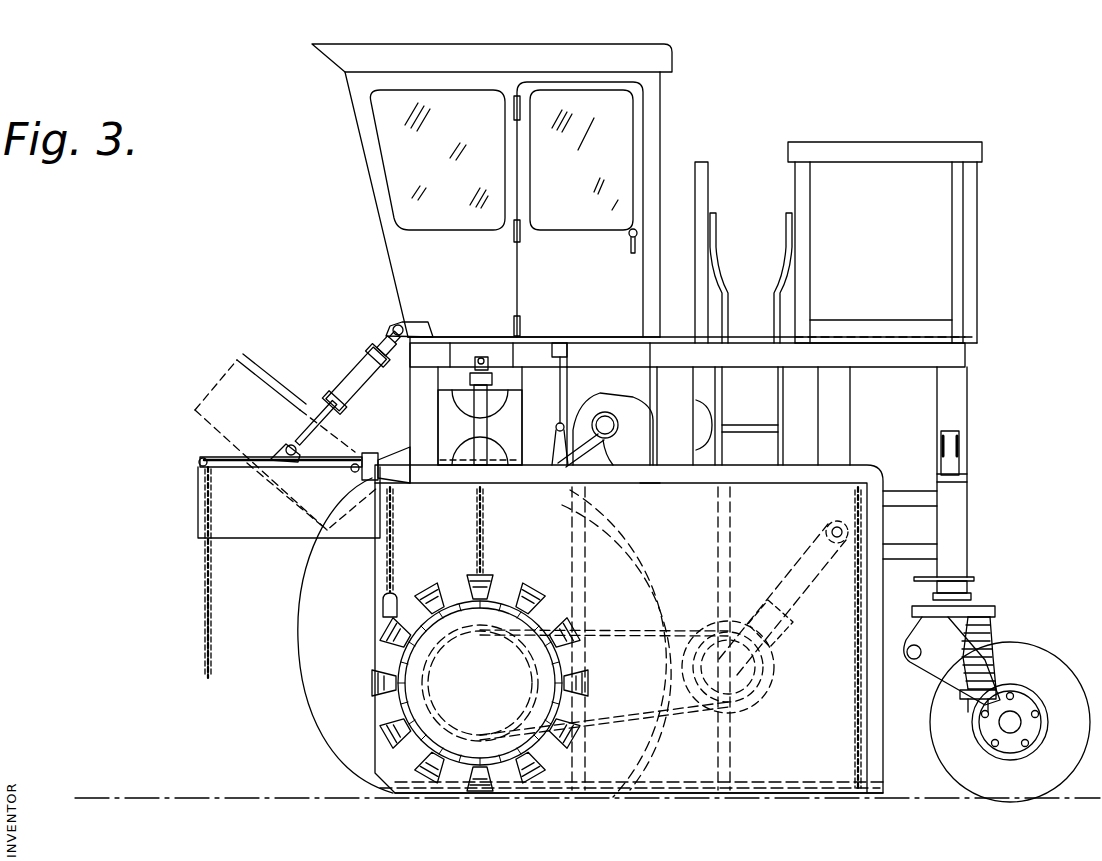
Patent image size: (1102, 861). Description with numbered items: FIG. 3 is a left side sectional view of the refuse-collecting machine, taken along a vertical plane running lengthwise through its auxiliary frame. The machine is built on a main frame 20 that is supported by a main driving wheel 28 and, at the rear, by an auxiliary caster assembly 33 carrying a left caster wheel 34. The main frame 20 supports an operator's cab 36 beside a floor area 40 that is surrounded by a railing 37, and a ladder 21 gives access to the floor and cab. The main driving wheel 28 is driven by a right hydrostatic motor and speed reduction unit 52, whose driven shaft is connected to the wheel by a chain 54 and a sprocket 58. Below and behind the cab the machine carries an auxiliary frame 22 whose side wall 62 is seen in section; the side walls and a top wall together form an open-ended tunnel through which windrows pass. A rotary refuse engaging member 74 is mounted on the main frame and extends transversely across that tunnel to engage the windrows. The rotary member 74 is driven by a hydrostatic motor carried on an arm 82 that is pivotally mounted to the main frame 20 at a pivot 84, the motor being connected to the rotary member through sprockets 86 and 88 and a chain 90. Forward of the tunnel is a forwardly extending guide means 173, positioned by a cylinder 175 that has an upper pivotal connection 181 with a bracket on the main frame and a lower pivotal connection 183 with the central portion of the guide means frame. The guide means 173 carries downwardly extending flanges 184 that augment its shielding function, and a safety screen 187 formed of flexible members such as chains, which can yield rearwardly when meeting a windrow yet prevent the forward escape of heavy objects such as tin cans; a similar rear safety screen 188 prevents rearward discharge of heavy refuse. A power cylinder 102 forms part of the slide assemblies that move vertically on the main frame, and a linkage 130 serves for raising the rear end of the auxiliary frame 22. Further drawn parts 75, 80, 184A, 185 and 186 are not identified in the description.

The main frame 20 is at (975, 420).
The ladder 21 is at (714, 223).
The auxiliary frame 22 is at (893, 758).
The main driving wheel 28 is at (328, 713).
The auxiliary rear caster assembly 33 is at (989, 598).
The left caster wheel 34 is at (1049, 656).
The operator's cab 36 is at (353, 88).
The railing 37 is at (832, 142).
The floor area 40 is at (742, 338).
The right hydrostatic motor and speed reduction unit 52 is at (593, 397).
The chain 54 is at (572, 468).
The sprocket 58 is at (652, 483).
The side wall 62 is at (688, 765).
The refuse engaging member 74 is at (380, 757).
The drive chain 75 is at (600, 633).
The sprocket 80 is at (752, 705).
The arm 82 is at (795, 568).
The pivot 84 is at (826, 530).
The sprocket 86 is at (795, 655).
The sprocket 88 is at (500, 773).
The chain 90 is at (622, 800).
The power cylinder 102 is at (478, 420).
The linkage 130 is at (752, 417).
The guide means 173 is at (193, 458).
The cylinder 175 is at (348, 360).
The upper pivotal connection 181 is at (400, 328).
The lower pivotal connection 183 is at (236, 397).
The downwardly extending flange 184 is at (203, 510).
The chain 184A is at (482, 574).
The chain 185 is at (386, 582).
The weight 186 is at (383, 612).
The safety screen 187 is at (207, 617).
The rear safety screen 188 is at (850, 753).